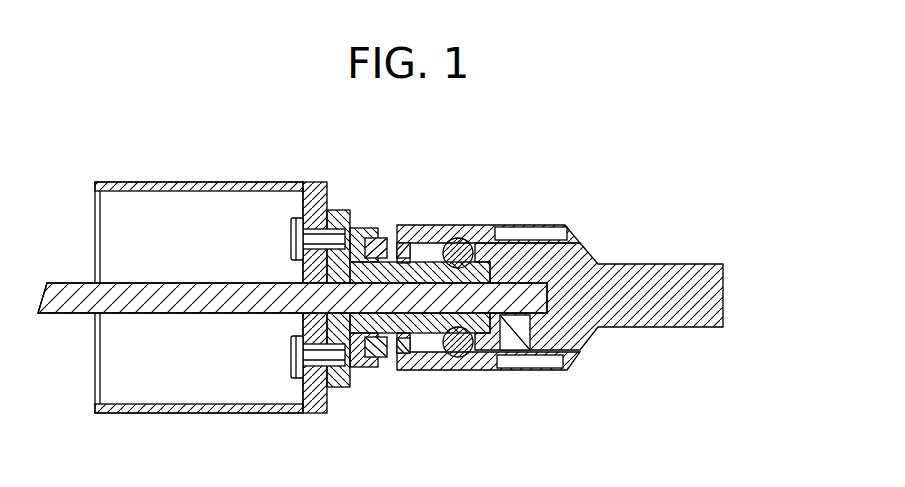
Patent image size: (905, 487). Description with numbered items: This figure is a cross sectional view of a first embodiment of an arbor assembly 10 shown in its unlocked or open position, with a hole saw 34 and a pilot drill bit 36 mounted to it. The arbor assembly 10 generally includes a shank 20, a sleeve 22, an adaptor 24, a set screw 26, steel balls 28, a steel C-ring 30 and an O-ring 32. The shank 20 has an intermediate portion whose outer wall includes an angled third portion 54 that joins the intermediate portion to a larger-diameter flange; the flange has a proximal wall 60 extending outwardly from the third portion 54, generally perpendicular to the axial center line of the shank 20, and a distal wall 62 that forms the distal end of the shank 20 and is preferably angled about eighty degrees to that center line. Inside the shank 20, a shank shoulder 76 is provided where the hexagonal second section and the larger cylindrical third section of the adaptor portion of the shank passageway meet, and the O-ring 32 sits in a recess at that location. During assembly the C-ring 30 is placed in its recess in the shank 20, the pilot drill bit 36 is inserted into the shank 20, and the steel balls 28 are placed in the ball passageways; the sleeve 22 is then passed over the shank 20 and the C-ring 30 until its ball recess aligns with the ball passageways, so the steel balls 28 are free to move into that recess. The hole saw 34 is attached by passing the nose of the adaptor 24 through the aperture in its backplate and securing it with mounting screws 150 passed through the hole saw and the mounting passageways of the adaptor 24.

The arbor assembly 10 is at (587, 167).
The shank 20 is at (700, 255).
The sleeve 22 is at (470, 207).
The adaptor 24 is at (342, 201).
The set screw 26 is at (512, 370).
The steel balls 28 is at (458, 238).
The C-ring 30 is at (396, 355).
The O-ring 32 is at (366, 367).
The hole saw 34 is at (175, 413).
The pilot drill bit 36 is at (77, 284).
The third portion 54 is at (382, 228).
The proximal wall 60 is at (370, 228).
The distal wall 62 is at (353, 227).
The shank shoulder 76 is at (380, 350).
The mounting screws 150 is at (290, 241).